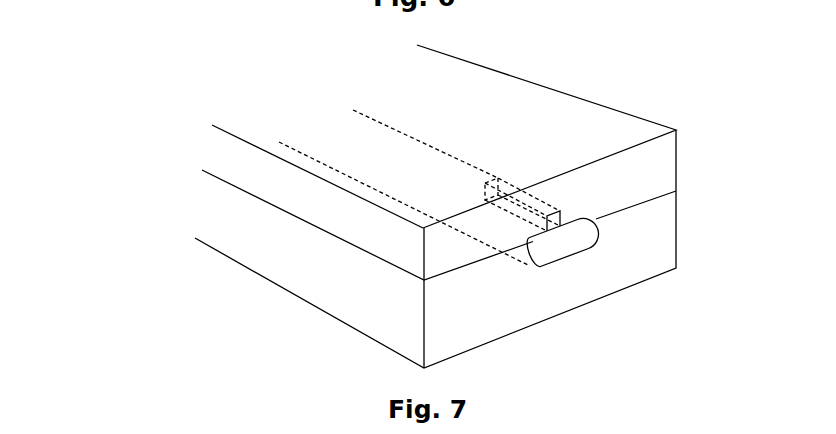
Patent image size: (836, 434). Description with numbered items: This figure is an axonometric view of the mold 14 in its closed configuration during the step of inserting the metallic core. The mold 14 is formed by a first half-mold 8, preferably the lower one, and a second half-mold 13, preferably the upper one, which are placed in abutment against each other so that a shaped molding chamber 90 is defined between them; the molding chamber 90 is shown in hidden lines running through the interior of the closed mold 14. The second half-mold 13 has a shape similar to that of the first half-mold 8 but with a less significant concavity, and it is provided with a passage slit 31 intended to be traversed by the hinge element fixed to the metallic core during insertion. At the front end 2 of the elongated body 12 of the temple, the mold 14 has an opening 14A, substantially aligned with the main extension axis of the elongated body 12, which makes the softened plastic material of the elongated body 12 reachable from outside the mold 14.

The mold 14 is at (160, 129).
The elongated body 12 is at (447, 175).
The second half-mold 13 is at (603, 128).
The passage slit 31 is at (572, 206).
The opening 14A is at (616, 237).
The front end 2 is at (575, 248).
The first half-mold 8 is at (483, 310).
The molding chamber 90 is at (433, 235).